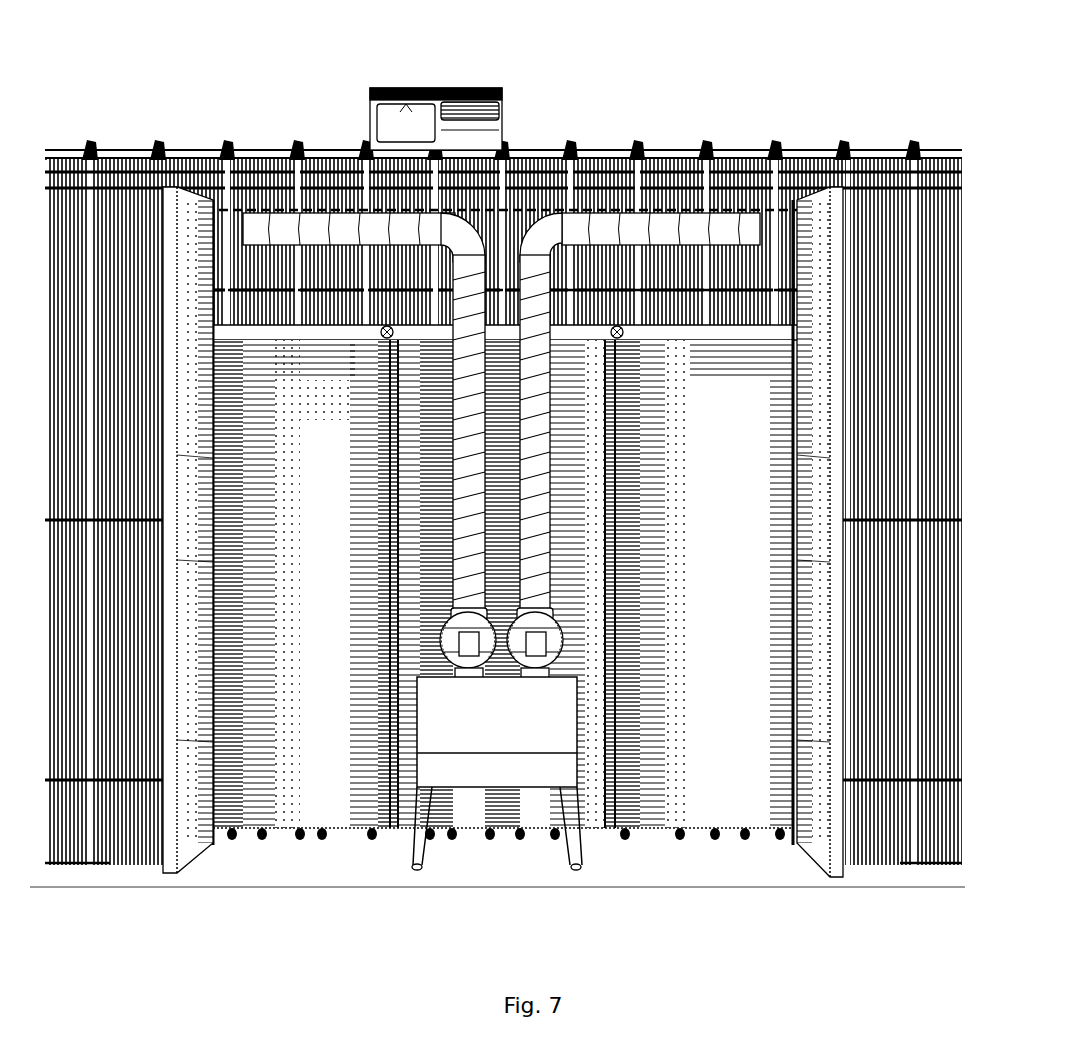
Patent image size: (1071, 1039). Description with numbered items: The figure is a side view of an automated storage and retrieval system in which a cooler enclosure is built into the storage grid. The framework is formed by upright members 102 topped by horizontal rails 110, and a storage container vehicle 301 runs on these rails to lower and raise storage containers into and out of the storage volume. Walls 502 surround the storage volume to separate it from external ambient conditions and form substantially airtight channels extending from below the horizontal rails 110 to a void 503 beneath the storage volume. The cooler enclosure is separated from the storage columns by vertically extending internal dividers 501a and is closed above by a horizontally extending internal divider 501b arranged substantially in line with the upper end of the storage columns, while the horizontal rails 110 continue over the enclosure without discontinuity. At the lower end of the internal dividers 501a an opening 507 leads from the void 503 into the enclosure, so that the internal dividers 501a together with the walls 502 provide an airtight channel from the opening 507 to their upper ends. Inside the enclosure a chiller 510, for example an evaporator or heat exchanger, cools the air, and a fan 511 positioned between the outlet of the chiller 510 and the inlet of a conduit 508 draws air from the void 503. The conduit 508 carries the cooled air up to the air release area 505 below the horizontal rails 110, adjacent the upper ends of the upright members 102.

The upright member 102 is at (88, 858).
The horizontal rails 110 is at (912, 156).
The storage container vehicle 301 is at (388, 88).
The vertically extending internal divider 501a is at (305, 778).
The horizontally extending internal divider 501b is at (708, 328).
The wall 502 is at (165, 862).
The void 503 is at (530, 833).
The air release area 505 is at (531, 195).
The opening 507 is at (228, 840).
The conduit 508 is at (268, 228).
The chiller 510 is at (515, 735).
The fan 511 is at (472, 636).